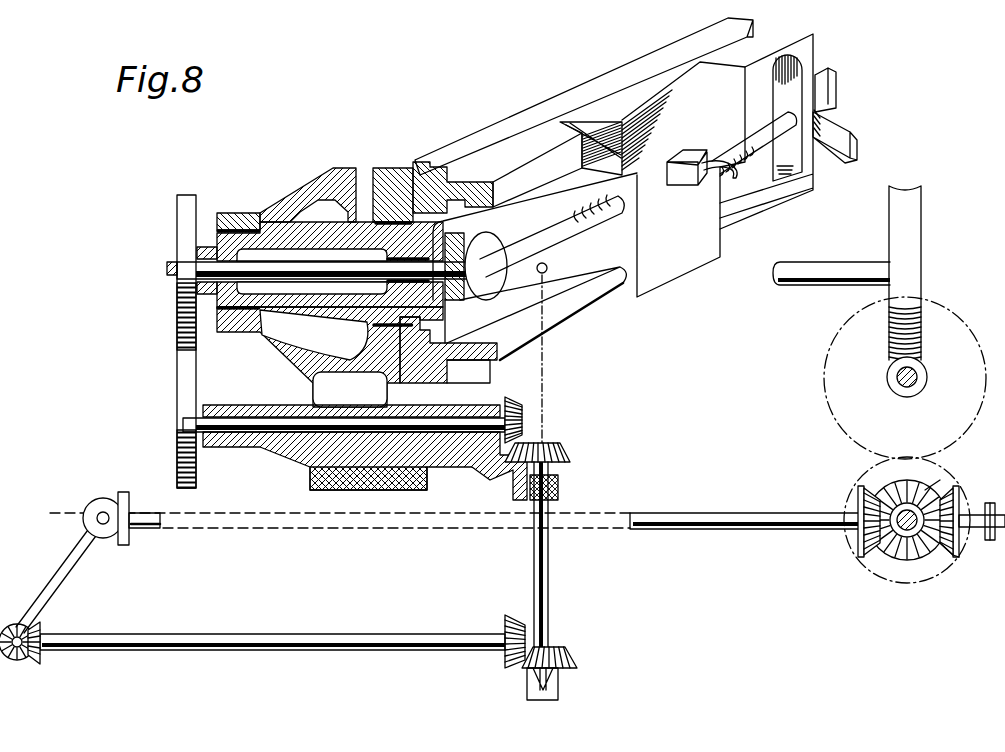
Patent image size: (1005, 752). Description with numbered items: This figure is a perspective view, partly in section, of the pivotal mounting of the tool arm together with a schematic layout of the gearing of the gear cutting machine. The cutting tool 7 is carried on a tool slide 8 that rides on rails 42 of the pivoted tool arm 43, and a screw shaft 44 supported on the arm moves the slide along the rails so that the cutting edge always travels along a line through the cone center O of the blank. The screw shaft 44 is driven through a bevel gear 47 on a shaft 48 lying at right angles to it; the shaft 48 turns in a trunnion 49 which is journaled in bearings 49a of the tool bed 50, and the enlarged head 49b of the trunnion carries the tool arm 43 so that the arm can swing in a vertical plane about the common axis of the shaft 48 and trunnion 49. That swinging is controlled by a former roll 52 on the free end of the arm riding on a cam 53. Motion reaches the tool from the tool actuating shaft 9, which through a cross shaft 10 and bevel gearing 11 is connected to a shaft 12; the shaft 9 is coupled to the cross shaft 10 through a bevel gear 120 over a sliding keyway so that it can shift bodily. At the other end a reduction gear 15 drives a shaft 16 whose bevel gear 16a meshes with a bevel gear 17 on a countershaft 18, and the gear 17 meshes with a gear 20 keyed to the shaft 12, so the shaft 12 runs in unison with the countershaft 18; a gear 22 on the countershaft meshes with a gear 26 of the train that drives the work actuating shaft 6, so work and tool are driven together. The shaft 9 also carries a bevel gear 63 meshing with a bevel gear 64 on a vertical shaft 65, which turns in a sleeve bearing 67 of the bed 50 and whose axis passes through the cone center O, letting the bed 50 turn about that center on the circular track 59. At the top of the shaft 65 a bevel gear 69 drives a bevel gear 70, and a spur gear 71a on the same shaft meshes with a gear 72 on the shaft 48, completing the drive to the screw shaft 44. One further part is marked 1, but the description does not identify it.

The hand rod 1 is at (792, 287).
The work actuating shaft 6 is at (897, 387).
The cutting tool 7 is at (730, 185).
The tool slide 8 is at (693, 143).
The tool actuating shaft 9 is at (295, 633).
The cross shaft 10 is at (75, 560).
The bevel gearing 11 is at (123, 492).
The shaft 12 is at (750, 512).
The reduction gear 15 is at (992, 542).
The shaft 16 is at (960, 532).
The bevel gear 16a is at (945, 556).
The bevel gear 17 is at (927, 488).
The countershaft 18 is at (903, 557).
The gear 20 is at (862, 537).
The gear 22 is at (860, 563).
The gear 26 is at (822, 372).
The rails 42 is at (540, 147).
The pivoted tool arm 43 is at (490, 155).
The screw shaft 44 is at (542, 238).
The bevel gear 47 is at (458, 300).
The shaft 48 is at (167, 269).
The trunnion 49 is at (285, 240).
The bearings 49a is at (235, 230).
The enlarged head 49b is at (425, 163).
The tool bed 50 is at (307, 187).
The former roll 52 is at (838, 100).
The cam 53 is at (856, 136).
The circular track 59 is at (310, 472).
The bevel gear 63 is at (507, 621).
The bevel gear 64 is at (562, 661).
The vertical shaft 65 is at (550, 563).
The sleeve bearing 67 is at (560, 482).
The bevel gear 69 is at (570, 449).
The bevel gear 70 is at (522, 420).
The spur gear 71a is at (182, 373).
The gear 72 is at (177, 212).
The bevel gear 120 is at (17, 662).
The cone center O is at (545, 273).